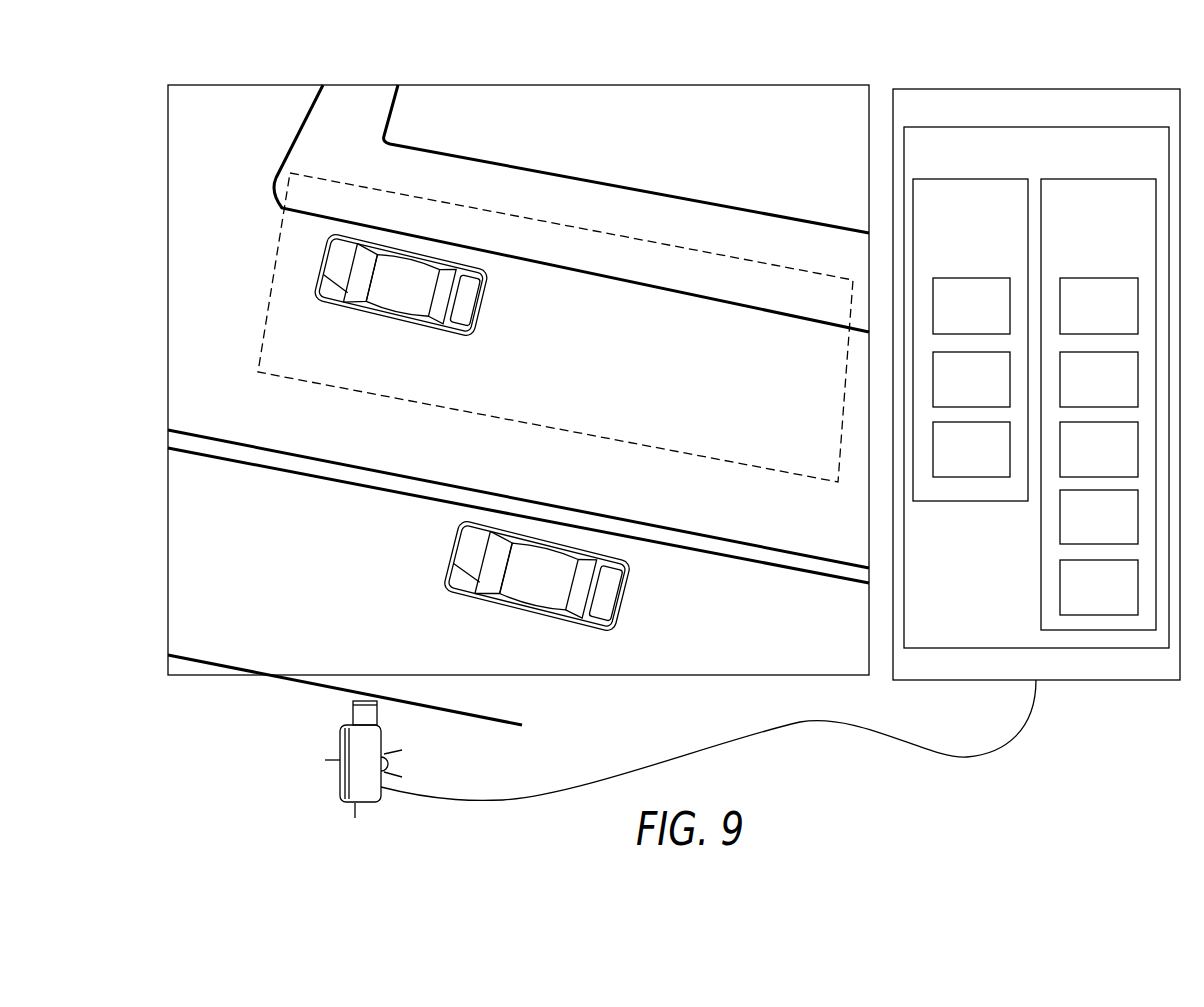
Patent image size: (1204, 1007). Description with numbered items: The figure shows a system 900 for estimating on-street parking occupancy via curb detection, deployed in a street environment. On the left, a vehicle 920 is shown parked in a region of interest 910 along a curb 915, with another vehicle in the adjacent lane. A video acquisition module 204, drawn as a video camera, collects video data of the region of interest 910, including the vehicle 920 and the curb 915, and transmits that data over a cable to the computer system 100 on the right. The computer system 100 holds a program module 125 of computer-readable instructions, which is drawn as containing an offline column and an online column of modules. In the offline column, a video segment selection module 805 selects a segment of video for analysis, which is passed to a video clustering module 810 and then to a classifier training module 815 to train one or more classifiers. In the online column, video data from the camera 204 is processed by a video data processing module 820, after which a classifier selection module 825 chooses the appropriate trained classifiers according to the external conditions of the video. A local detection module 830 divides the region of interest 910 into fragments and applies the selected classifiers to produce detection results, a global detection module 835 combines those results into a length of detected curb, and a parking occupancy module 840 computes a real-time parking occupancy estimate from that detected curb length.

The system 900 is at (876, 89).
The computer system 100 is at (1036, 366).
The program module 125 is at (1056, 163).
The video segment selection module 805 is at (985, 317).
The video clustering module 810 is at (985, 390).
The classifier training module 815 is at (985, 460).
The video data processing module 820 is at (1113, 317).
The classifier selection module 825 is at (1113, 390).
The local detection module 830 is at (1113, 460).
The global detection module 835 is at (1113, 527).
The parking occupancy module 840 is at (1113, 598).
The region of interest 910 is at (270, 290).
The curb 915 is at (563, 268).
The vehicle 920 is at (458, 334).
The video acquisition module 204 is at (340, 786).